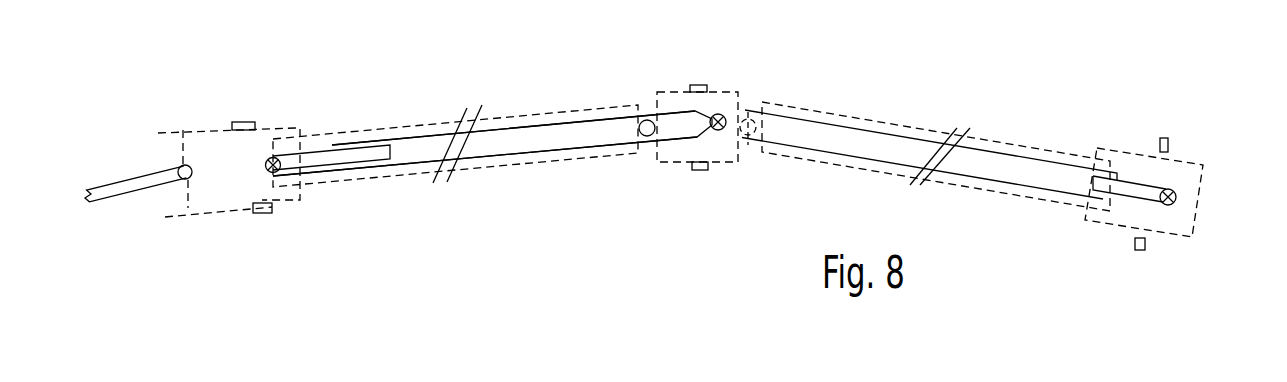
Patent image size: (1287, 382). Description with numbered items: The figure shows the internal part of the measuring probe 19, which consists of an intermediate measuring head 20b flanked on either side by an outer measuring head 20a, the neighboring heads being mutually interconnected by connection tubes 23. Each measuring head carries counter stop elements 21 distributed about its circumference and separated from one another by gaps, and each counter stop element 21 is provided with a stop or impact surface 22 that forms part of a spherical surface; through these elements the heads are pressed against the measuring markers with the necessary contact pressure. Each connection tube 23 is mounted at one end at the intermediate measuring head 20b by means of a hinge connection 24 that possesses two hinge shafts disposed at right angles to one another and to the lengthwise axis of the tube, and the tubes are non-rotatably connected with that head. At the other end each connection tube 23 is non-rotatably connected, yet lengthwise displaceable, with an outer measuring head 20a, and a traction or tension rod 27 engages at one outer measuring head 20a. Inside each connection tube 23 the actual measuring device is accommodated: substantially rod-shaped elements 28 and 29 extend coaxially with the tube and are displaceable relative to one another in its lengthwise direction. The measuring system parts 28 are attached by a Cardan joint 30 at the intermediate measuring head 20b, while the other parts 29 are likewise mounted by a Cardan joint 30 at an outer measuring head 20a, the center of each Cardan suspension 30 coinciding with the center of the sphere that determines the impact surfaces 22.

The measuring probe 19 is at (565, 184).
The outer measuring head 20a is at (182, 121).
The intermediate measuring head 20b is at (736, 72).
The counter stop element 21 is at (250, 112).
The stop surface 22 is at (237, 118).
The connection tube 23 is at (528, 113).
The hinge connection 24 is at (647, 120).
The tension rod 27 is at (130, 183).
The rod-shaped measuring system part 28 is at (423, 128).
The rod-shaped measuring system part 29 is at (313, 153).
The Cardan joint 30 is at (272, 180).